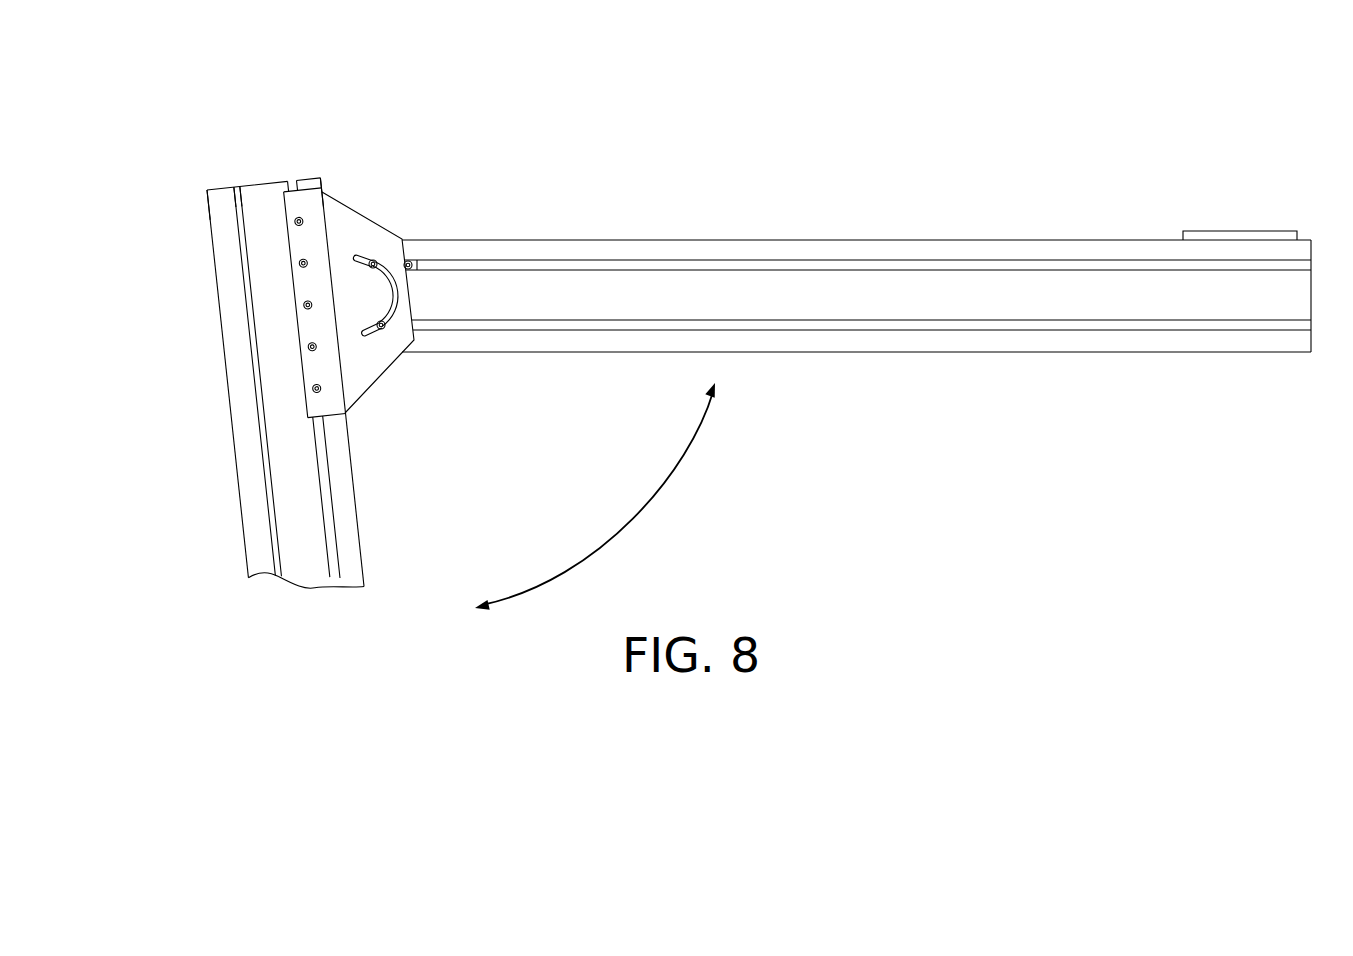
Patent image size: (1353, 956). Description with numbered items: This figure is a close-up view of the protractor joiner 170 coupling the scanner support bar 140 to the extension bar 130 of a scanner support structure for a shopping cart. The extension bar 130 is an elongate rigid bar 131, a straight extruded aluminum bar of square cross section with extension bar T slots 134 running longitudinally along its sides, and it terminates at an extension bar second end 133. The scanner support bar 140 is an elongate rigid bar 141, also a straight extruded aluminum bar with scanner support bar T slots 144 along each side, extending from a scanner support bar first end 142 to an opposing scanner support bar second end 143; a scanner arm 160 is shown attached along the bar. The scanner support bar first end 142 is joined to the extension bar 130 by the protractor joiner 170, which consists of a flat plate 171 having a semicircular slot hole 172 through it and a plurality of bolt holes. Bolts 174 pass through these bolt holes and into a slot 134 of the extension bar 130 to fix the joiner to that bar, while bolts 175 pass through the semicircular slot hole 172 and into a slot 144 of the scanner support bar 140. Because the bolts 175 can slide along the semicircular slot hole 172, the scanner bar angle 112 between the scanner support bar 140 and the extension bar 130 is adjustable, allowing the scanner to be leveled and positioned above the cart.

The scanner bar angle 112 is at (650, 520).
The extension bar 130 is at (190, 471).
The elongate rigid bar 131 is at (258, 197).
The extension bar second end 133 is at (228, 125).
The extension bar T slots 134 is at (235, 193).
The scanner support bar 140 is at (993, 118).
The elongate rigid bar 141 is at (967, 302).
The scanner support bar first end 142 is at (372, 160).
The scanner support bar second end 143 is at (1288, 400).
The scanner support bar T slots 144 is at (1034, 268).
The scanner arm 160 is at (1197, 233).
The protractor joiner 170 is at (285, 352).
The flat plate 171 is at (333, 408).
The semicircular slot hole 172 is at (393, 304).
The bolts 174 is at (293, 221).
The bolts 175 is at (374, 260).